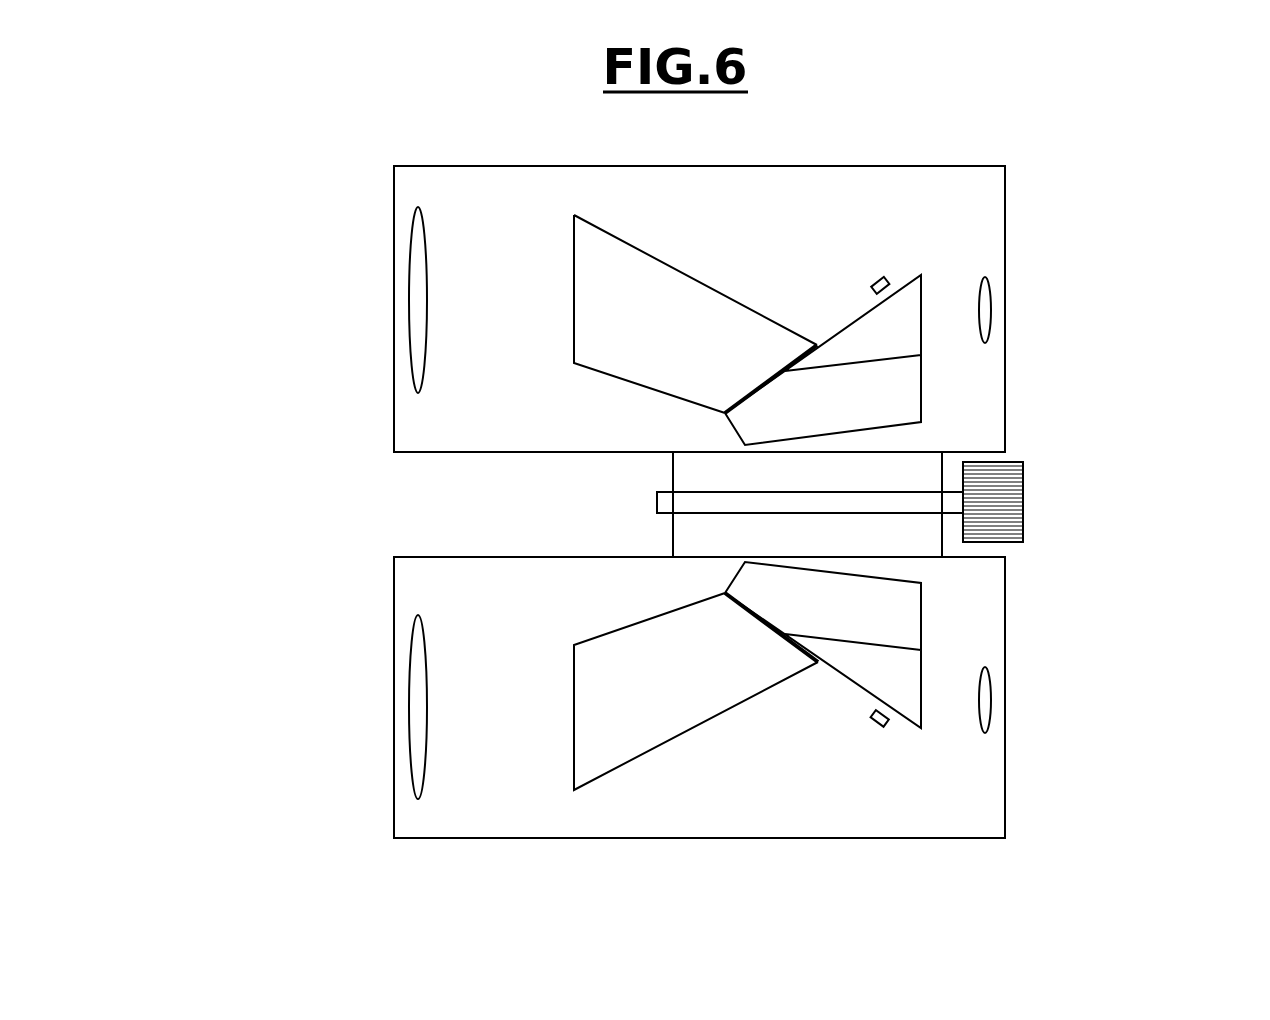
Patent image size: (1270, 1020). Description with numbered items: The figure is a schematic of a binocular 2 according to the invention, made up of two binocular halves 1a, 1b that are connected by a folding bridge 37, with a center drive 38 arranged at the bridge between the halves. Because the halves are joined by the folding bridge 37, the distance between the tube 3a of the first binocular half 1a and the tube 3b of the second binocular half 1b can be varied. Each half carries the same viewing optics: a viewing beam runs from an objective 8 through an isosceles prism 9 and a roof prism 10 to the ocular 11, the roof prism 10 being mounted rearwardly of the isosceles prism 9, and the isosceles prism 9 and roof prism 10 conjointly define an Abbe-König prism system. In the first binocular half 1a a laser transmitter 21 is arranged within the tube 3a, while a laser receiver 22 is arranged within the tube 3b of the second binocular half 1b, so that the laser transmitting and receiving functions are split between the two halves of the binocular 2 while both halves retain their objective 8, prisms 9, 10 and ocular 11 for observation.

The first binocular half 1a is at (1070, 203).
The second binocular half 1b is at (1042, 780).
The binocular 2 is at (272, 387).
The tube 3a is at (790, 166).
The tube 3b is at (728, 838).
The objective 8 is at (412, 297).
The isosceles prism 9 is at (586, 248).
The roof prism 10 is at (913, 307).
The ocular 11 is at (992, 310).
The laser transmitter 21 is at (876, 278).
The laser receiver 22 is at (878, 728).
The folding bridge 37 is at (655, 456).
The center drive 38 is at (1028, 498).